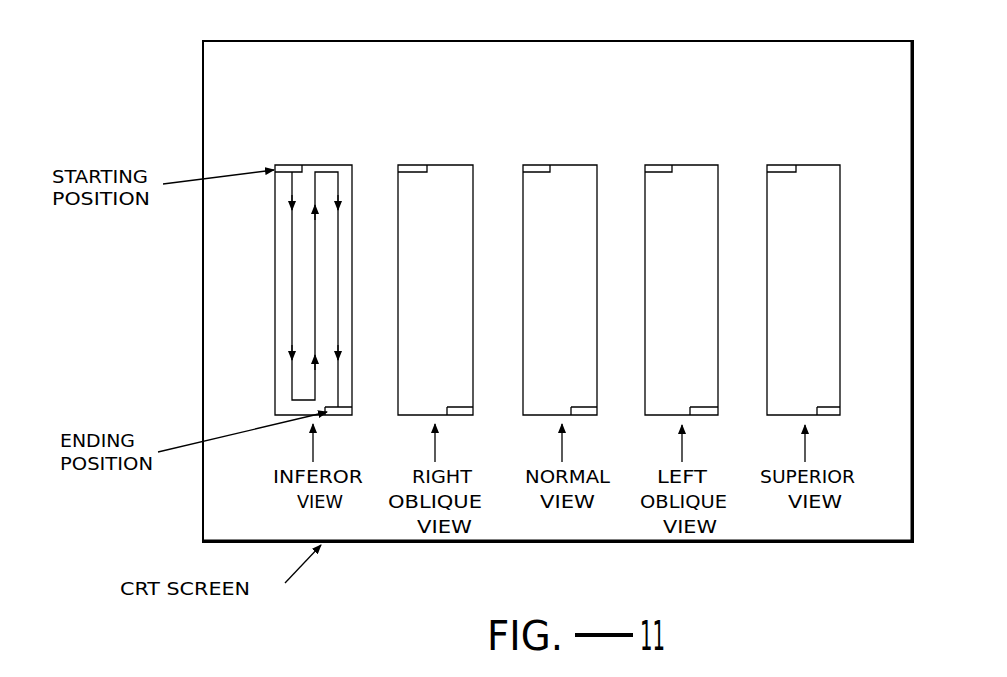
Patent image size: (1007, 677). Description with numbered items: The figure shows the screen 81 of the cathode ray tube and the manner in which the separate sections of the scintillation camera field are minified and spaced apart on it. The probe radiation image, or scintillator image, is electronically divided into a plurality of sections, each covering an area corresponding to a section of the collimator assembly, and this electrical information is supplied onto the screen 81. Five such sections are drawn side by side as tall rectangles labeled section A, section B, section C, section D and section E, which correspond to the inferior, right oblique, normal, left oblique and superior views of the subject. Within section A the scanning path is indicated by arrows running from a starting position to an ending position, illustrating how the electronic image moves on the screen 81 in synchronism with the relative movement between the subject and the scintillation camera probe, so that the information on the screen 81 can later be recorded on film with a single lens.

The screen 81 is at (917, 197).
The section A of scintillation camera field (inferior view) A is at (289, 166).
The section B (right oblique view) B is at (411, 166).
The section C (normal view) C is at (533, 167).
The section D (left oblique view) D is at (655, 167).
The section E (superior view) E is at (778, 166).